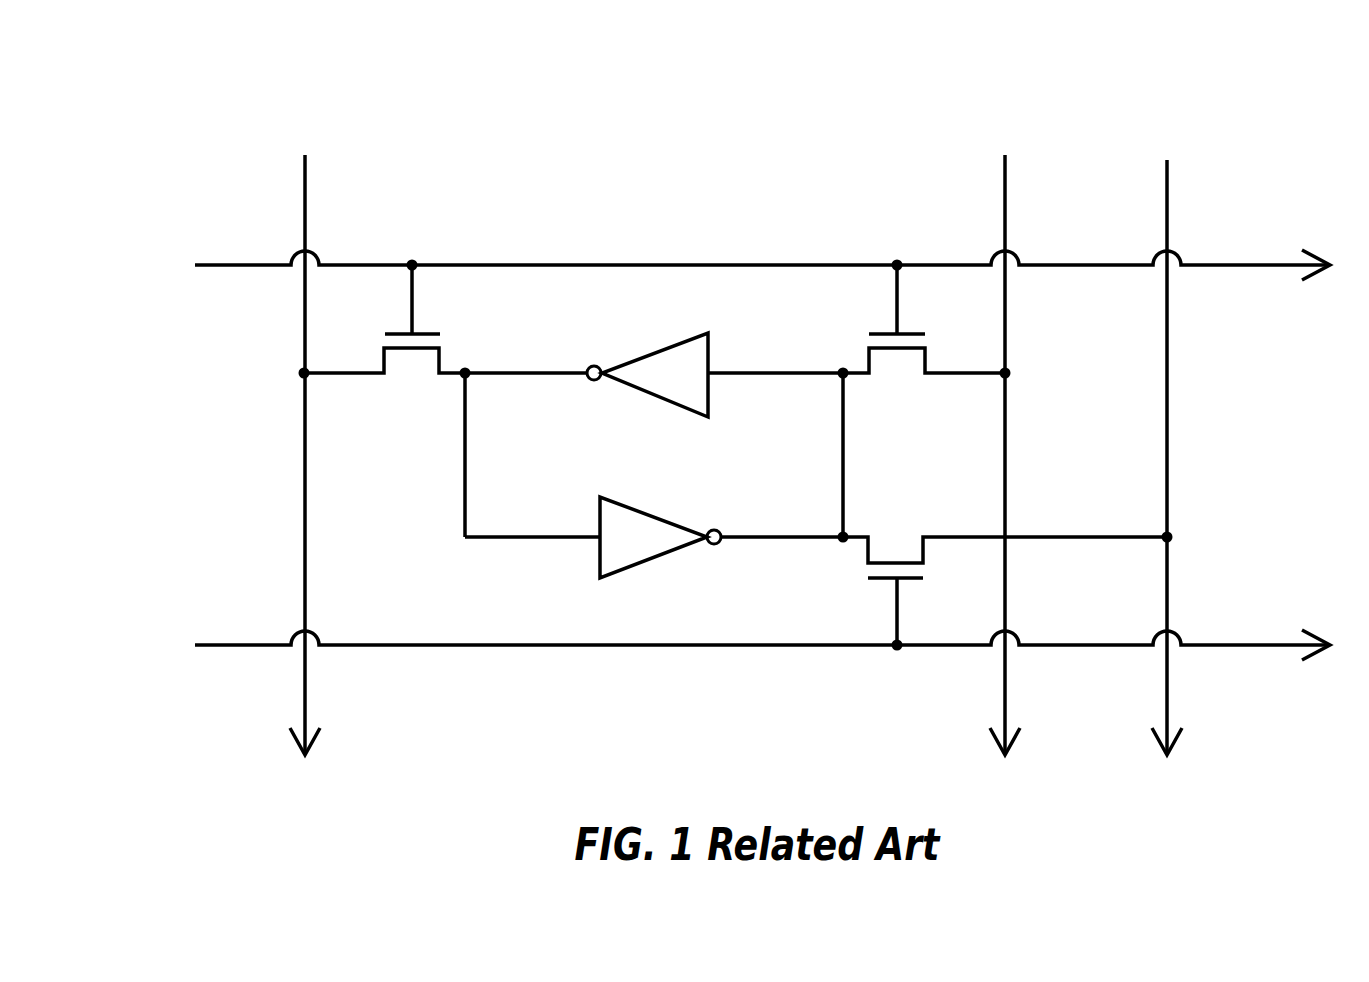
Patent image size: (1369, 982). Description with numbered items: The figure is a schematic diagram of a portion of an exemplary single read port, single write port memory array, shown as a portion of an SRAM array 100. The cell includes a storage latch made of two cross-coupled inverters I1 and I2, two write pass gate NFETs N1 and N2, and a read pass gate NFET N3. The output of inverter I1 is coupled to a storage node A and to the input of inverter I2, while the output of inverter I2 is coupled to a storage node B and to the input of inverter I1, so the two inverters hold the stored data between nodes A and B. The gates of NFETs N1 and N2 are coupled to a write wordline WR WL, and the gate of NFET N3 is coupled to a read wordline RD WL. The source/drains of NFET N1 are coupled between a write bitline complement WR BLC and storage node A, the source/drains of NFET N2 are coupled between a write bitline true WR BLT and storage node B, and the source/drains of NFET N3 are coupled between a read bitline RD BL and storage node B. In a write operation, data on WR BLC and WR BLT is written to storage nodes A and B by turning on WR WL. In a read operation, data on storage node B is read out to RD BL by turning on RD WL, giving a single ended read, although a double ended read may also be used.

The SRAM array 100 is at (1304, 116).
The write pass gate NFET N1 is at (385, 331).
The write pass gate NFET N2 is at (924, 333).
The read pass gate NFET N3 is at (1005, 591).
The inverter I1 is at (654, 375).
The inverter I2 is at (654, 537).
The storage node A is at (480, 390).
The storage node B is at (820, 388).
The write wordline WR WL is at (709, 268).
The read wordline RD WL is at (710, 652).
The write bitline complement WR BLC is at (294, 441).
The write bitline true WR BLT is at (997, 437).
The read bitline RD BL is at (1160, 437).